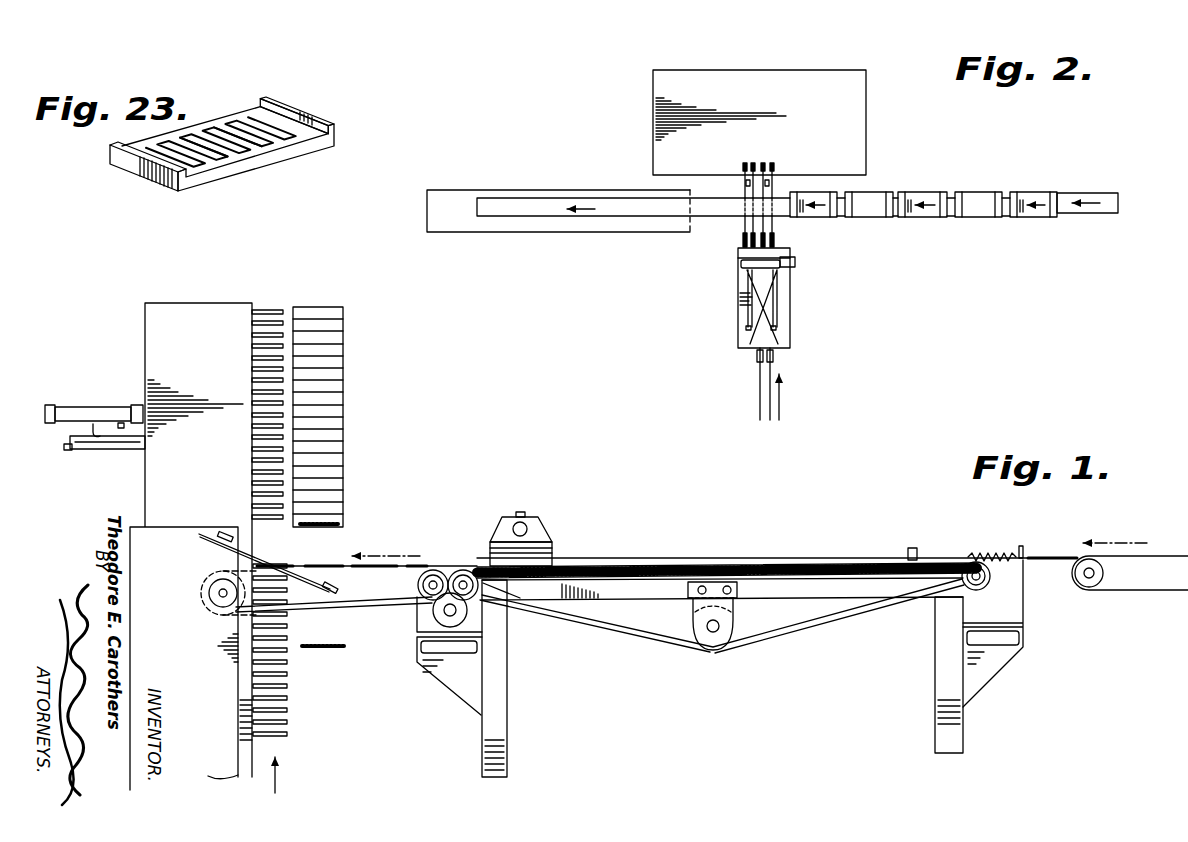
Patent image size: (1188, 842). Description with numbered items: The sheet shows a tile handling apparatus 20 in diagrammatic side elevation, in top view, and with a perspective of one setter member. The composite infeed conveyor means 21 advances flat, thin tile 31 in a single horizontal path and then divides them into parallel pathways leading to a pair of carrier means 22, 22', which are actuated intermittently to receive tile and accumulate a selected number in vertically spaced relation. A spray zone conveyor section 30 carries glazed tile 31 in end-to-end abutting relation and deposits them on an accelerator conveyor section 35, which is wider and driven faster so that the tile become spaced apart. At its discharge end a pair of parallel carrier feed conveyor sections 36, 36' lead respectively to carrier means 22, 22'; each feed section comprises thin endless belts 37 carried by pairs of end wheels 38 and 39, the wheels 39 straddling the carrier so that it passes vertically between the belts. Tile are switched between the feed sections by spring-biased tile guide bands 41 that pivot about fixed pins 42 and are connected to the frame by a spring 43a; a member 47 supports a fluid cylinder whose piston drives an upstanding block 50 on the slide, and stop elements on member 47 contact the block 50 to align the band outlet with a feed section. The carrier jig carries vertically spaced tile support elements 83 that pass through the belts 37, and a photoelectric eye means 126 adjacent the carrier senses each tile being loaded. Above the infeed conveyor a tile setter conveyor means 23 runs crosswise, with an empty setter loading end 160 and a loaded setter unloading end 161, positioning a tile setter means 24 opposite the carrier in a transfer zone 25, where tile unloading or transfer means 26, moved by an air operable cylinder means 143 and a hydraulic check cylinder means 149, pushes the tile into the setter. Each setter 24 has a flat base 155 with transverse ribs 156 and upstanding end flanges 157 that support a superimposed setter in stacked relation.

In FIG. 2, the apparatus 20 is at (778, 66).
In FIG. 2, the composite infeed conveyor means 21 is at (804, 312).
In FIG. 1, the composite infeed conveyor means 21 is at (803, 525).
In FIG. 2, the carrier means 22 is at (714, 196).
In FIG. 1, the carrier means 22 is at (318, 756).
In FIG. 2, the adjacent carrier means 22' is at (802, 193).
In FIG. 1, the adjacent carrier means 22' is at (274, 385).
In FIG. 2, the tile setter conveyor means 23 is at (616, 218).
In FIG. 1, the tile setter conveyor means 23 is at (345, 526).
In FIG. 23, the tile setter means 24 is at (140, 175).
In FIG. 2, the tile setter means 24 is at (958, 190).
In FIG. 1, the transfer zone 25 is at (289, 323).
In FIG. 1, the tile unloading or transfer means 26 is at (205, 325).
In FIG. 2, the spray zone conveyor section 30 is at (755, 391).
In FIG. 1, the spray zone conveyor section 30 is at (1156, 540).
In FIG. 1, the tile 31 is at (322, 564).
In FIG. 2, the accelerator conveyor section 35 is at (737, 312).
In FIG. 1, the accelerator conveyor section 35 is at (716, 545).
In FIG. 2, the carrier feed conveyor section 36 is at (707, 243).
In FIG. 1, the carrier feed conveyor section 36 is at (403, 529).
In FIG. 2, the carrier feed conveyor section 36' is at (820, 243).
In FIG. 1, the endless belts 37 is at (362, 606).
In FIG. 1, the end wheels 38 is at (433, 570).
In FIG. 1, the end wheels 39 is at (211, 580).
In FIG. 1, the tile guide bands 41 is at (838, 556).
In FIG. 1, the fixed pins 42 is at (915, 548).
In FIG. 1, the spring 43a is at (1000, 551).
In FIG. 1, the member 47 is at (552, 556).
In FIG. 1, the upstanding block 50 is at (540, 521).
In FIG. 1, the tile support elements 83 is at (260, 482).
In FIG. 1, the photoelectric eye means 126 is at (327, 594).
In FIG. 1, the air operable cylinder means 143 is at (97, 405).
In FIG. 1, the cylinder means 149 is at (98, 445).
In FIG. 23, the flat base 155 is at (263, 164).
In FIG. 23, the transverse ribs 156 is at (232, 128).
In FIG. 23, the upstanding end flanges 157 is at (333, 121).
In FIG. 2, the empty tile setter loading end 160 is at (1071, 192).
In FIG. 2, the loaded tile setter unloading end 161 is at (496, 190).